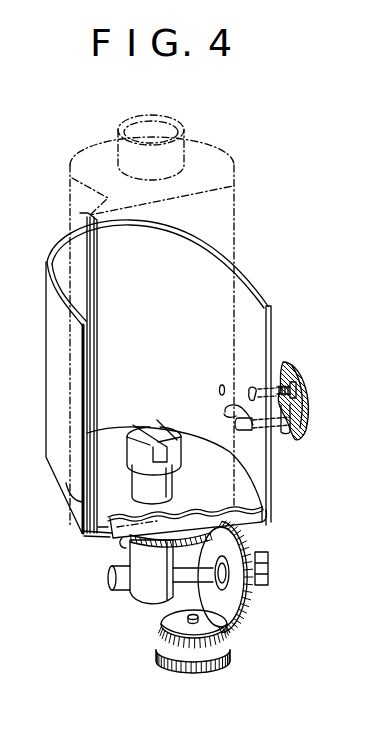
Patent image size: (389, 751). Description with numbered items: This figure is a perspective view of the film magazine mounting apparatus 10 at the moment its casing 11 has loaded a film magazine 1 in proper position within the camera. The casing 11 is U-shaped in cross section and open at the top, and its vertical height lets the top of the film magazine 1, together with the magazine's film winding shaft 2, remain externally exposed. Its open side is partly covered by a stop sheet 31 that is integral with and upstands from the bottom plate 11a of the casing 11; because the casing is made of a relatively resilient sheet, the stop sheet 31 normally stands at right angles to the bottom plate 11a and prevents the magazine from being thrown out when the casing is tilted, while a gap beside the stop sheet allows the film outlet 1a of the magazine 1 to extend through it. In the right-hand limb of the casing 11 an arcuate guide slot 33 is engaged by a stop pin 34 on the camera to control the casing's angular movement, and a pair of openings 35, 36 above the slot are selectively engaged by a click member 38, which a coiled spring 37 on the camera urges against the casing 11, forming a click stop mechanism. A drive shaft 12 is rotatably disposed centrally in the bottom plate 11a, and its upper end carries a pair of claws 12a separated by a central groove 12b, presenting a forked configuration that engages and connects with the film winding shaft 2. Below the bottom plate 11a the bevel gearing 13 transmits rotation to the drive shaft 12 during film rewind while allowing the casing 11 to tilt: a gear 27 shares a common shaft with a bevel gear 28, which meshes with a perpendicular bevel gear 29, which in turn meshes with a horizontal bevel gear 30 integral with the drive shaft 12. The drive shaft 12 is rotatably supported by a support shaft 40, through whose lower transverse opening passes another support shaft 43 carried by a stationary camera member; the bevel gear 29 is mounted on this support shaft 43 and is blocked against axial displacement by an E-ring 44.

The film magazine 1 is at (237, 190).
The film outlet 1a is at (84, 242).
The film winding shaft 2 is at (175, 133).
The apparatus 10 is at (248, 256).
The casing 11 is at (256, 306).
The bottom plate 11a is at (98, 533).
The drive shaft 12 is at (168, 484).
The claws 12a is at (131, 433).
The central groove 12b is at (152, 425).
The bevel gearing 13 is at (247, 632).
The gear 27 is at (170, 654).
The bevel gear 28 is at (161, 622).
The bevel gear 29 is at (268, 564).
The bevel gear 30 is at (127, 543).
The stop sheet 31 is at (258, 520).
The arcuate guide slot 33 is at (240, 430).
The stop pin 34 is at (279, 426).
The opening 35 is at (250, 390).
The opening 36 is at (218, 391).
The coiled spring 37 is at (296, 391).
The click member 38 is at (297, 382).
The support shaft 40 is at (147, 593).
The support shaft 43 is at (110, 580).
The E-ring 44 is at (230, 582).